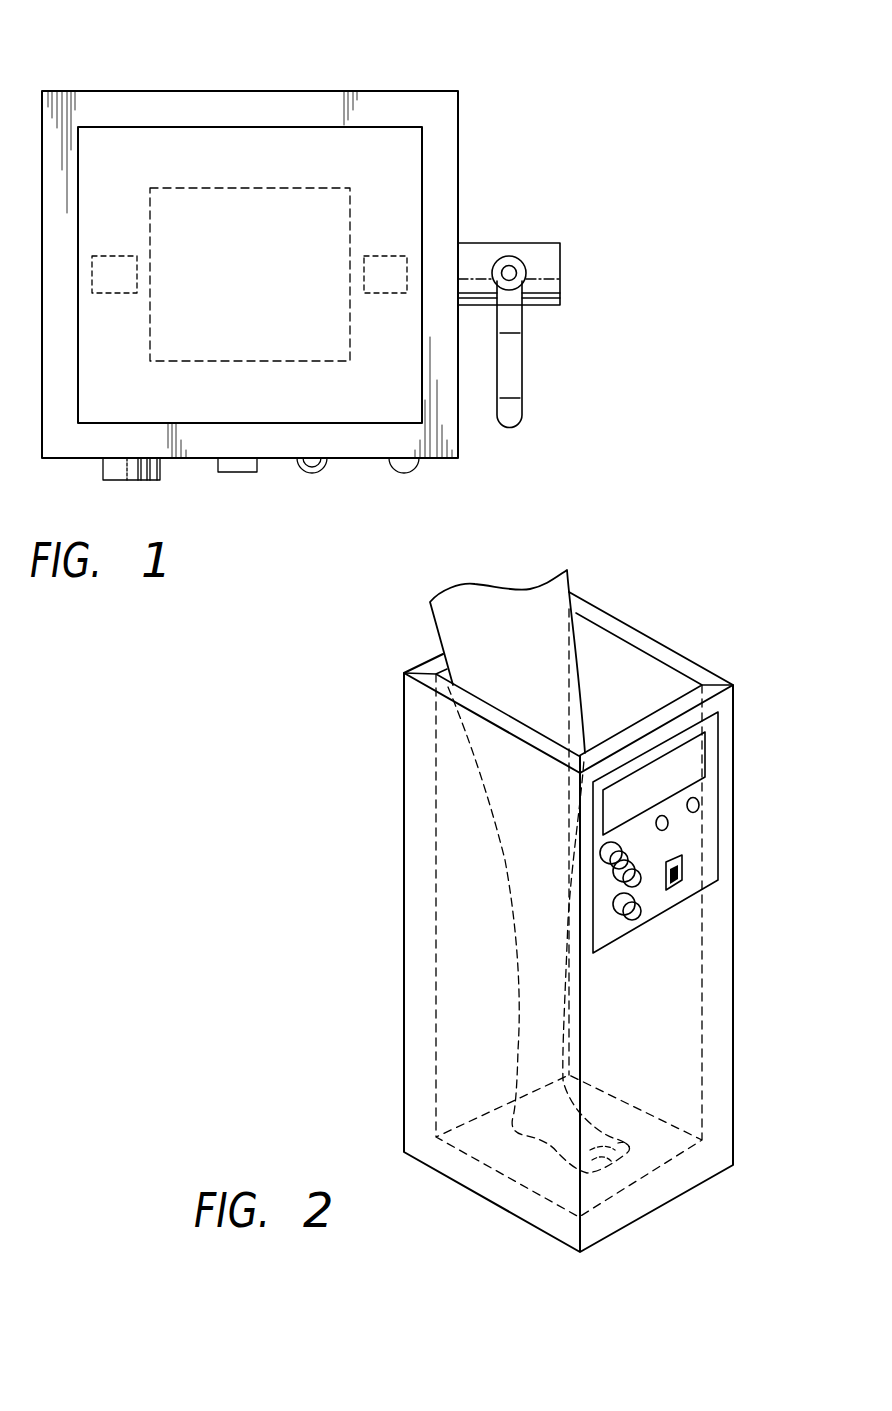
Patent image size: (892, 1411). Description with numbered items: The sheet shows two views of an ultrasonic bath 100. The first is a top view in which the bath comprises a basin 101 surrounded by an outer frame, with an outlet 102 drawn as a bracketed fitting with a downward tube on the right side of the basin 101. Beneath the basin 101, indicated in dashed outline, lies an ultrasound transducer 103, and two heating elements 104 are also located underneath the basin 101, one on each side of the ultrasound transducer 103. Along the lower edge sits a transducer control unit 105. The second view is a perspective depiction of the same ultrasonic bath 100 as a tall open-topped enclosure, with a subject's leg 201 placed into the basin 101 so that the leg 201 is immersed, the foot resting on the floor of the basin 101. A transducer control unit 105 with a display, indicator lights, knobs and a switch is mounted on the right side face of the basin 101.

In FIG. 1, the ultrasonic bath 100 is at (517, 88).
In FIG. 2, the ultrasonic bath 100 is at (677, 625).
In FIG. 1, the basin 101 is at (460, 192).
In FIG. 2, the basin 101 is at (400, 820).
In FIG. 1, the outlet 102 is at (560, 273).
In FIG. 1, the ultrasound transducer 103 is at (250, 187).
In FIG. 1, the heating elements 104 is at (115, 255).
In FIG. 1, the transducer control unit 105 is at (252, 510).
In FIG. 2, the transducer control unit 105 is at (670, 890).
In FIG. 2, the subject's leg 201 is at (557, 625).